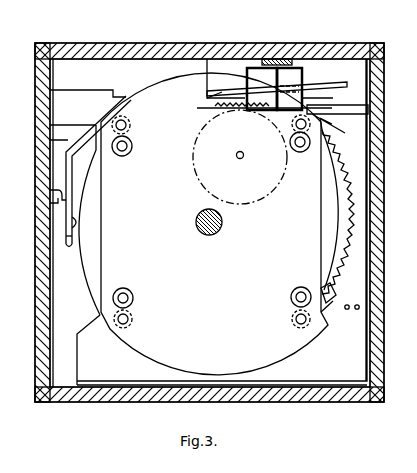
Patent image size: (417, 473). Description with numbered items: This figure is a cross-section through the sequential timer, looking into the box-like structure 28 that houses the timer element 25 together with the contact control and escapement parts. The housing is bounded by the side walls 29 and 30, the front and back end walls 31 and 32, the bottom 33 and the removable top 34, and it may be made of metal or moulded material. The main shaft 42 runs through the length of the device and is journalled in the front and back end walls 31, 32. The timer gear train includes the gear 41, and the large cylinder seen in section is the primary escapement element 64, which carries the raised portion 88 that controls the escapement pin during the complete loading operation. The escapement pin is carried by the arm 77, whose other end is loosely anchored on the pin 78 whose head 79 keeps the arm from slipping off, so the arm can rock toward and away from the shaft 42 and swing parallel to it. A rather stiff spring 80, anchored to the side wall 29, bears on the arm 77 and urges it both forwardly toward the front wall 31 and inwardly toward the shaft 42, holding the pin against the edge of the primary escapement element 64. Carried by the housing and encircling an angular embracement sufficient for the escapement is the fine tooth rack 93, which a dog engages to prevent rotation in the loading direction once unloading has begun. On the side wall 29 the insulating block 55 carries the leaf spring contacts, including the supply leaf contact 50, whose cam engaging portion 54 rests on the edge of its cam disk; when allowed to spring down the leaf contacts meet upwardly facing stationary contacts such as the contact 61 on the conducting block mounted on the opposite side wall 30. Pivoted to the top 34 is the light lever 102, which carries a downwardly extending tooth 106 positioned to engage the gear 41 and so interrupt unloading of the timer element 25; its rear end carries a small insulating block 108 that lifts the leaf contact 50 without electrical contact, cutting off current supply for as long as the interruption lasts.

The timer element 25 is at (172, 318).
The box-like structure 28 is at (192, 224).
The side wall 29 is at (47, 283).
The side wall 30 is at (375, 342).
The front end wall 31 is at (230, 26).
The back end wall 32 is at (64, 320).
The bottom 33 is at (295, 395).
The removable top 34 is at (174, 48).
The gear 41 is at (212, 112).
The main shaft 42 is at (201, 233).
The leaf spring contact 50 is at (300, 82).
The cam engaging portion 54 is at (207, 58).
The insulating block 55 is at (72, 103).
The contact 61 is at (333, 106).
The primary escapement element 64 is at (96, 266).
The arm 77 is at (74, 142).
The pin 78 is at (67, 252).
The head 79 is at (78, 222).
The spring 80 is at (58, 192).
The raised portion 88 is at (331, 301).
The fine tooth rack 93 is at (335, 290).
The lever 102 is at (262, 68).
The tooth 106 is at (238, 86).
The insulating block 108 is at (272, 124).